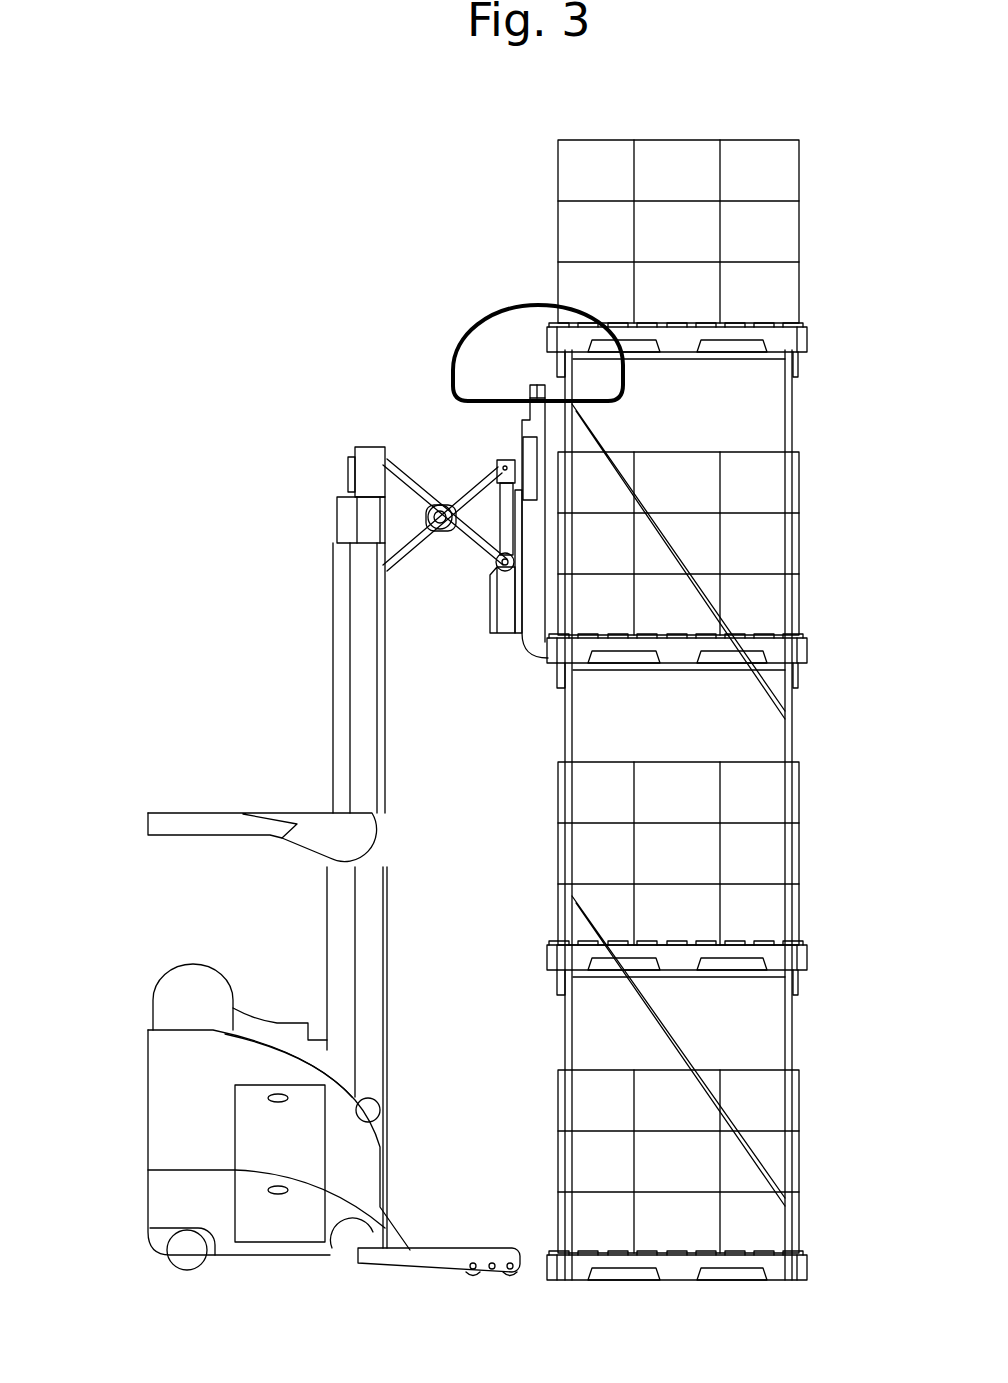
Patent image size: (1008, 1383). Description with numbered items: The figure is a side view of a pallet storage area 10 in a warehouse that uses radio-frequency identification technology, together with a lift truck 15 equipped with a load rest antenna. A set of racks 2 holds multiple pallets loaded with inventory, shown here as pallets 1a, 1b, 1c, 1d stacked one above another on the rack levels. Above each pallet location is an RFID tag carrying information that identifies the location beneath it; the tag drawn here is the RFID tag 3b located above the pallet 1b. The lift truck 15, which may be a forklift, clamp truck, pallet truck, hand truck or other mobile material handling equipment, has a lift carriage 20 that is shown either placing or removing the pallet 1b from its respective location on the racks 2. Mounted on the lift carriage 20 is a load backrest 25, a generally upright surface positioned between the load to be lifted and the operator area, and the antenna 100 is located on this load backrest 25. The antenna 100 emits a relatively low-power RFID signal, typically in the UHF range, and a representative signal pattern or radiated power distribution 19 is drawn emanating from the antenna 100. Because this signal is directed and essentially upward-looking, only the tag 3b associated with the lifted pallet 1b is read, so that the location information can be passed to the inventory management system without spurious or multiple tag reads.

The pallet storage area 10 is at (691, 124).
The pallet 1a is at (808, 340).
The pallet 1b is at (808, 650).
The pallet 1c is at (808, 958).
The pallet 1d is at (808, 1267).
The racks 2 is at (730, 360).
The RFID tag 3b is at (550, 355).
The signal pattern 19 is at (453, 366).
The antenna 100 is at (530, 396).
The lift carriage 20 is at (510, 640).
The load backrest 25 is at (536, 566).
The lift truck 15 is at (130, 1122).